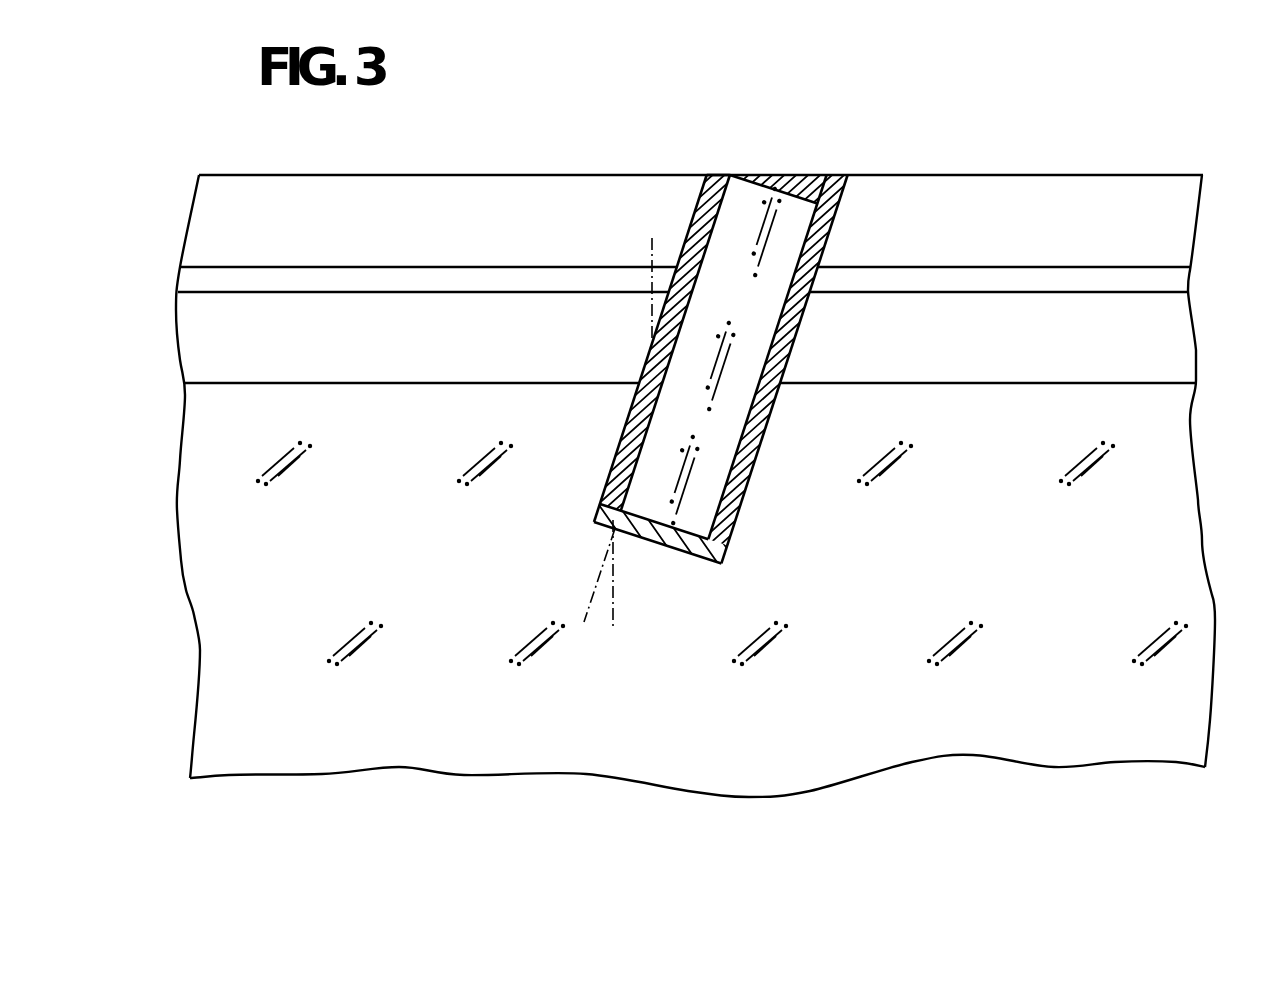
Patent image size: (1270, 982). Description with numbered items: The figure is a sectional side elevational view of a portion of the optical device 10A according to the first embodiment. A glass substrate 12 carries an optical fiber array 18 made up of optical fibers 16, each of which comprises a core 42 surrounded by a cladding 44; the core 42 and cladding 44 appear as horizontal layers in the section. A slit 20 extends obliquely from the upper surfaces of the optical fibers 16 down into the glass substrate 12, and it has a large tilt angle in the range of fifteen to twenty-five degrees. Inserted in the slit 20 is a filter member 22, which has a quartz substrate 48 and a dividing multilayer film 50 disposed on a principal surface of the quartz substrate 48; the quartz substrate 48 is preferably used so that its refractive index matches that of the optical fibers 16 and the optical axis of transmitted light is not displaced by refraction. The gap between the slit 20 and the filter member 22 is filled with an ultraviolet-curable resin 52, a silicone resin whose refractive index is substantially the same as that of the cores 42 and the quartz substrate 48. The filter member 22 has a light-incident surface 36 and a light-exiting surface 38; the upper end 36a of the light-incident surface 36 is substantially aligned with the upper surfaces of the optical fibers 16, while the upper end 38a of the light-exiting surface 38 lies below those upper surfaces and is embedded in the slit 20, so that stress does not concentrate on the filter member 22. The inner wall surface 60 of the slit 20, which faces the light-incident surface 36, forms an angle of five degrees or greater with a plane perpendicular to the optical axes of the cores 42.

The optical device 10A is at (479, 139).
The glass substrate 12 is at (1160, 465).
The optical fiber 16 is at (1148, 174).
The optical fiber array 18 is at (1020, 172).
The slit 20 is at (753, 470).
The filter member 22 is at (727, 505).
The light-incident surface 36 is at (697, 277).
The upper end of the light-incident surface 36a is at (728, 175).
The light-exiting surface 38 is at (790, 353).
The upper end of the light-exiting surface 38a is at (838, 198).
The core 42 is at (1160, 277).
The cladding 44 is at (1160, 222).
The quartz substrate 48 is at (675, 524).
The dividing multilayer film 50 is at (612, 470).
The ultraviolet-curable resin 52 is at (640, 432).
The inner wall surface 60 is at (699, 222).